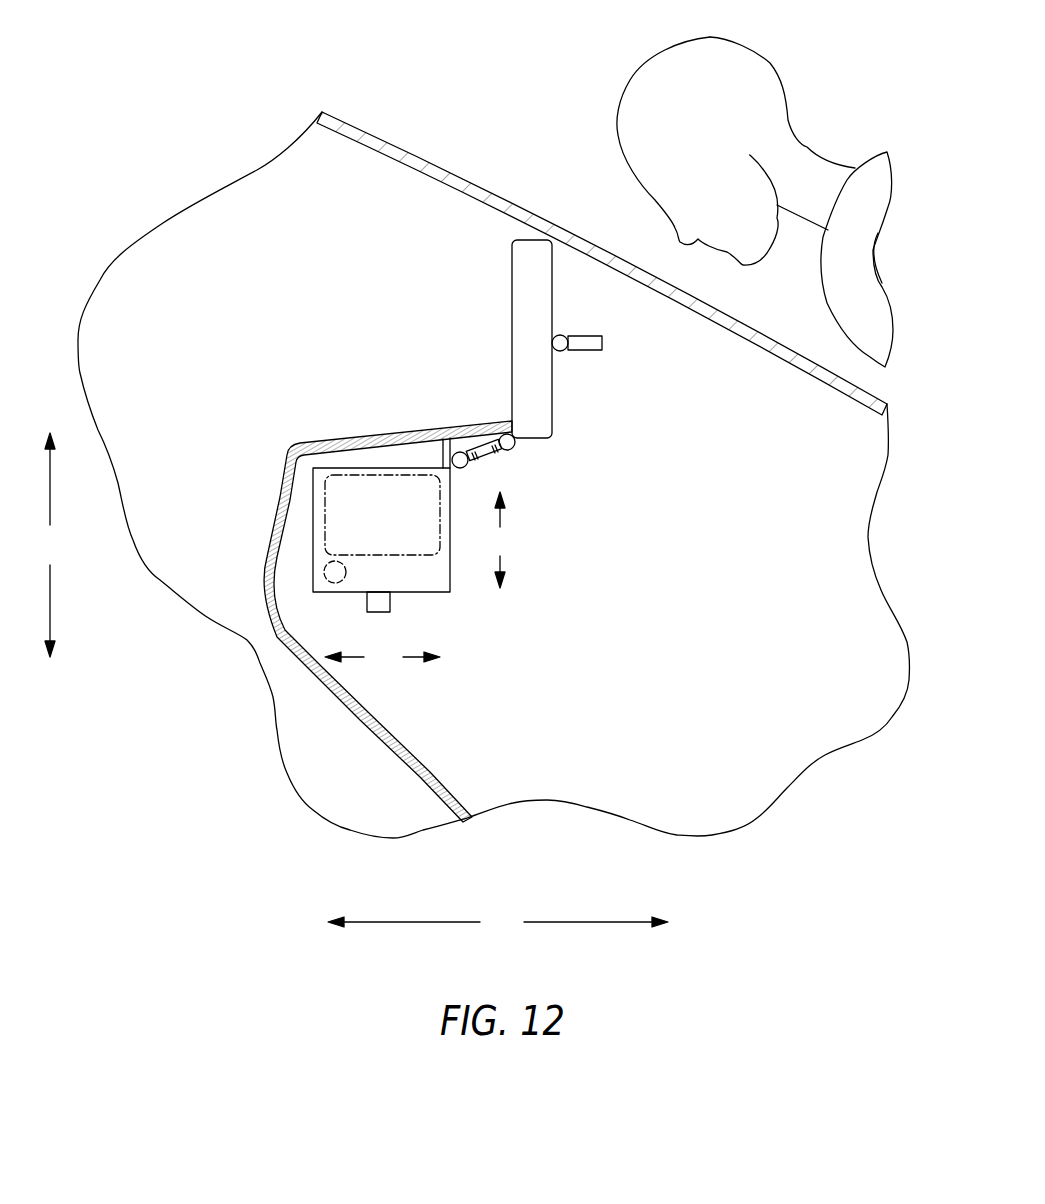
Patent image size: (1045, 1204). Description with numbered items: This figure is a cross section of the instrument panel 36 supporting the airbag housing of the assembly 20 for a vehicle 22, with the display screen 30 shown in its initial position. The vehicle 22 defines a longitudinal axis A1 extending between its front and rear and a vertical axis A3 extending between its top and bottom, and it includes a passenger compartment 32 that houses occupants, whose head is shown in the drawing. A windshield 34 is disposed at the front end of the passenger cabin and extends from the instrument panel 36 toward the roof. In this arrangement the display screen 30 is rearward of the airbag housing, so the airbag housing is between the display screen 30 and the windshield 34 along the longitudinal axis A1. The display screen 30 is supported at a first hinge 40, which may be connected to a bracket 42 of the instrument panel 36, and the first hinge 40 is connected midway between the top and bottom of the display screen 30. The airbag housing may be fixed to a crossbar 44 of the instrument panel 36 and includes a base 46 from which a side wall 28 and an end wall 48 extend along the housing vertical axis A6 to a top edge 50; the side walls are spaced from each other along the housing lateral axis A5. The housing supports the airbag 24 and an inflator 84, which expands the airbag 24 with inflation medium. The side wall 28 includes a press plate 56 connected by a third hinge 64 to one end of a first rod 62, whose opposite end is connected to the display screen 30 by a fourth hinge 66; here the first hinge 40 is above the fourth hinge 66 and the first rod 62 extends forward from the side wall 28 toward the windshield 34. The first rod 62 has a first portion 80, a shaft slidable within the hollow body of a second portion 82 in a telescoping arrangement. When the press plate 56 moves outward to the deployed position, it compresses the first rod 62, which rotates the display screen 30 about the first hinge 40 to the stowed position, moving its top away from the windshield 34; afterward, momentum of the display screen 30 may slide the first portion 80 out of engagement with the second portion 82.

The assembly 20 is at (523, 688).
The vehicle 22 is at (482, 147).
The airbag 24 is at (315, 503).
The side wall 28 is at (450, 560).
The display screen 30 is at (512, 352).
The passenger compartment 32 is at (417, 262).
The windshield 34 is at (728, 318).
The instrument panel 36 is at (337, 432).
The first hinge 40 is at (562, 335).
The bracket 42 is at (602, 343).
The crossbar 44 is at (391, 600).
The base 46 is at (327, 597).
The end wall 48 is at (433, 577).
The top edge 50 is at (378, 468).
The press plate 56 is at (442, 460).
The first rod 62 is at (497, 460).
The third hinge 64 is at (464, 468).
The fourth hinge 66 is at (515, 446).
The first portion 80 is at (476, 447).
The second portion 82 is at (500, 437).
The inflator 84 is at (325, 568).
The longitudinal axis A1 is at (498, 921).
The vertical axis A3 is at (52, 545).
The housing lateral axis A5 is at (382, 657).
The housing vertical axis A6 is at (502, 540).